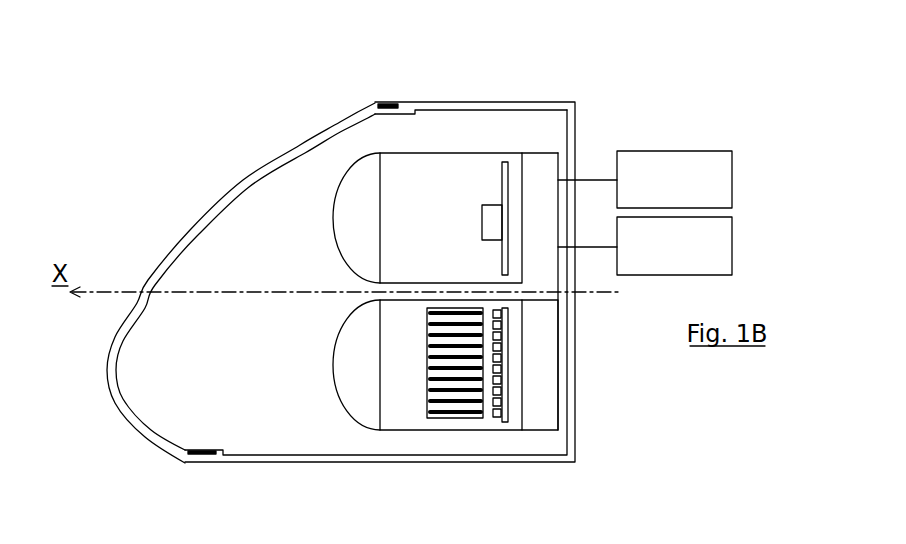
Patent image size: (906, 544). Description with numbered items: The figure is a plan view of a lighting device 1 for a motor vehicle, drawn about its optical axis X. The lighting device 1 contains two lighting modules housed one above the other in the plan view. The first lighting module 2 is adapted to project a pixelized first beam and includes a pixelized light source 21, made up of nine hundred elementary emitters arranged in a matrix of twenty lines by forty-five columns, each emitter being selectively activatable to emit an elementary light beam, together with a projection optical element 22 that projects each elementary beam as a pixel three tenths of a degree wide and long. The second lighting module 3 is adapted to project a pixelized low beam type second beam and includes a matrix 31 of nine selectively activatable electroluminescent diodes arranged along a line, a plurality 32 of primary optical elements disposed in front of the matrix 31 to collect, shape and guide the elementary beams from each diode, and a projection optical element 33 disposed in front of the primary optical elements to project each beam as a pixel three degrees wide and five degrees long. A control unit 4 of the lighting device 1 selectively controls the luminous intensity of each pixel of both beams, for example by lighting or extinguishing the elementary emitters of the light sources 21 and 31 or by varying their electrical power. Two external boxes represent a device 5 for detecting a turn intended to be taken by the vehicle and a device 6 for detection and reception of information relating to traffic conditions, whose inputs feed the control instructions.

The lighting device 1 is at (246, 243).
The first lighting module 2 is at (393, 191).
The second lighting module 3 is at (388, 336).
The control unit 4 is at (531, 338).
The device for detecting a turn 5 is at (665, 195).
The device for detection and reception of information relating to traffic conditions 6 is at (665, 260).
The pixelized light source 21 is at (492, 203).
The projection optical element 22 is at (362, 203).
The matrix of elementary emitters 31 is at (512, 365).
The plurality of primary optical elements 32 is at (455, 421).
The projection optical element 33 is at (364, 390).